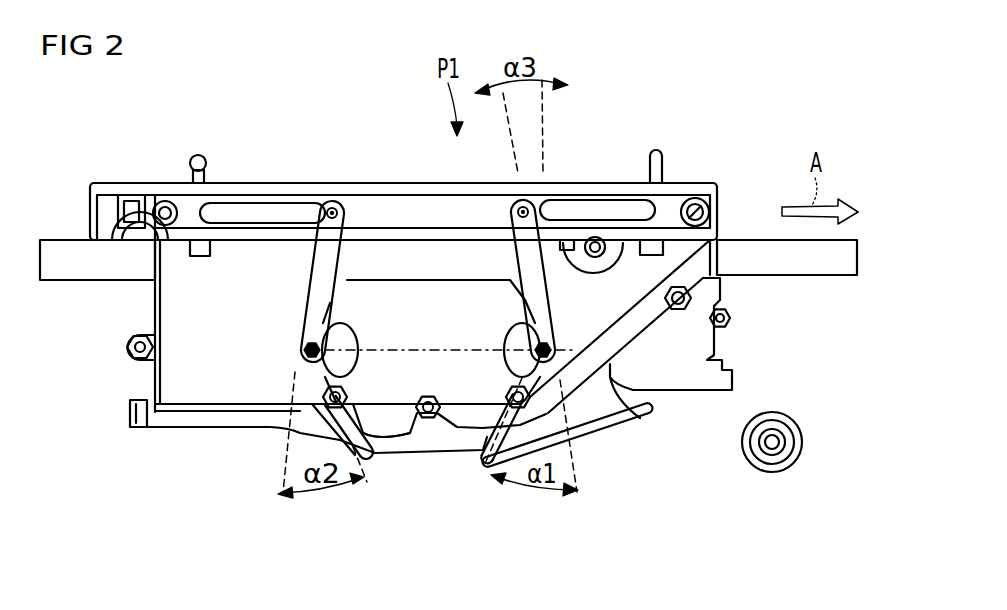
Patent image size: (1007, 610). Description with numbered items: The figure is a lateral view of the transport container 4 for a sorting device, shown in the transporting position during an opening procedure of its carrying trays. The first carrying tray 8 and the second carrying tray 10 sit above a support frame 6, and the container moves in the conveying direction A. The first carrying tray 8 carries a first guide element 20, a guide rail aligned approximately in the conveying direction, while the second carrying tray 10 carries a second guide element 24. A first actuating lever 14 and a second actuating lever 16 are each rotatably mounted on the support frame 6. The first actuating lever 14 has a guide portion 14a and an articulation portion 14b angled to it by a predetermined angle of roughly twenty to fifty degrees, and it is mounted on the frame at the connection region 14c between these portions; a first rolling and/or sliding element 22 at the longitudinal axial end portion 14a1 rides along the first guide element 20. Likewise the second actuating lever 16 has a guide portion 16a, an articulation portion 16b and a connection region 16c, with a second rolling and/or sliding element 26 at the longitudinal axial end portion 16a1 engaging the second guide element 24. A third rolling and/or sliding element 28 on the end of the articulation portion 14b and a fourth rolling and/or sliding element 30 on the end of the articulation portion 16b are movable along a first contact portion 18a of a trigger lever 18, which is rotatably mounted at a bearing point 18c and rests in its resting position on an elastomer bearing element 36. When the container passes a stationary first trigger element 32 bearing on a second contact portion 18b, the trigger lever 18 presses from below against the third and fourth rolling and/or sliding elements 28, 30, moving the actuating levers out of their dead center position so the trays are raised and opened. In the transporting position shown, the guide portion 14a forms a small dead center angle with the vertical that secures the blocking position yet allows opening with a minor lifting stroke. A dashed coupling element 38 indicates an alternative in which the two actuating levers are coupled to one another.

The transport container 4 is at (674, 127).
The support frame 6 is at (213, 388).
The first carrying tray 8 is at (604, 181).
The second carrying tray 10 is at (233, 182).
The first actuating lever 14 is at (570, 348).
The guide portion 14a is at (556, 291).
The longitudinal axial end portion 14a1 is at (505, 192).
The articulation portion 14b is at (510, 389).
The connection region 14c is at (512, 338).
The second actuating lever 16 is at (312, 340).
The guide portion 16a is at (318, 264).
The longitudinal axial end portion 16a1 is at (370, 205).
The articulation portion 16b is at (300, 386).
The connection region 16c is at (348, 340).
The trigger lever 18 is at (573, 385).
The first contact portion 18a is at (388, 432).
The second contact portion 18b is at (634, 412).
The bearing point 18c is at (700, 290).
The first guide element 20 is at (575, 200).
The first rolling and/or sliding element 22 is at (532, 183).
The second guide element 24 is at (270, 203).
The second rolling and/or sliding element 26 is at (331, 200).
The third rolling and/or sliding element 28 is at (490, 468).
The fourth rolling and/or sliding element 30 is at (366, 470).
The first trigger element 32 is at (779, 457).
The bearing element 36 is at (428, 420).
The coupling element 38 is at (422, 350).